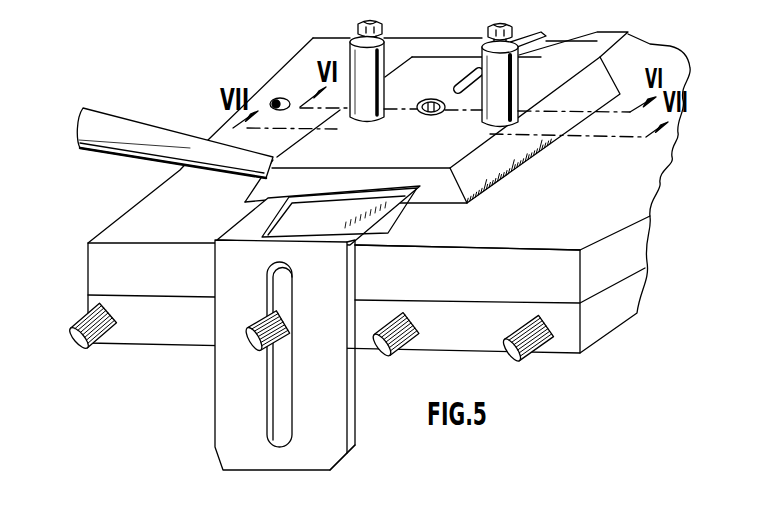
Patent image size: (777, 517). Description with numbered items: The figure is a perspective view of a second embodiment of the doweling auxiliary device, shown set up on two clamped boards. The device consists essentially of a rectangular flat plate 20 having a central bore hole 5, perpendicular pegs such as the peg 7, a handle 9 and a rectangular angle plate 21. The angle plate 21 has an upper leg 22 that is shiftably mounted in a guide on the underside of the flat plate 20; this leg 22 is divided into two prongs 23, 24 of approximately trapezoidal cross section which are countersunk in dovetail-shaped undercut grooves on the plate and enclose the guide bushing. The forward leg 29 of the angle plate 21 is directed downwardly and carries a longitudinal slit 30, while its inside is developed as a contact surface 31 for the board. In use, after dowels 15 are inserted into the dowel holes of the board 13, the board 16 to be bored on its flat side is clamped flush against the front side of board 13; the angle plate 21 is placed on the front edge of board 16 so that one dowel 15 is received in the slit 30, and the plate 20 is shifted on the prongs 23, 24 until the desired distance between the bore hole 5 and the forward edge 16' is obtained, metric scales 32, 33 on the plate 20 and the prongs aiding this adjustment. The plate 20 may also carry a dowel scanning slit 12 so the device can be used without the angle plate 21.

The central bore hole 5 is at (430, 101).
The perpendicular peg 7 is at (357, 62).
The handle 9 is at (123, 127).
The dowel scanning slit 12 is at (475, 80).
The board 13 is at (452, 332).
The dowel 15 is at (383, 356).
The board 16 is at (366, 324).
The forward edge of the board 16' is at (467, 235).
The flat plate 20 is at (428, 55).
The angle plate 21 is at (298, 328).
The upper leg 22 is at (233, 215).
The prong 23 is at (522, 40).
The prong 24 is at (606, 36).
The forward leg 29 is at (333, 397).
The longitudinal slit 30 is at (280, 418).
The contact surface 31 is at (338, 436).
The metric scale 32 is at (512, 160).
The metric scale 33 is at (376, 223).